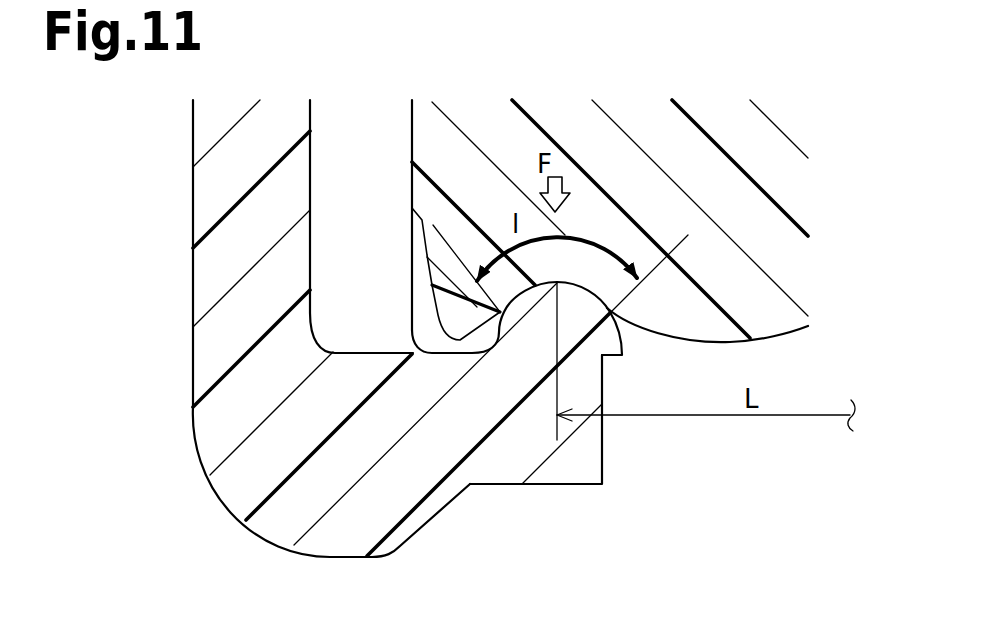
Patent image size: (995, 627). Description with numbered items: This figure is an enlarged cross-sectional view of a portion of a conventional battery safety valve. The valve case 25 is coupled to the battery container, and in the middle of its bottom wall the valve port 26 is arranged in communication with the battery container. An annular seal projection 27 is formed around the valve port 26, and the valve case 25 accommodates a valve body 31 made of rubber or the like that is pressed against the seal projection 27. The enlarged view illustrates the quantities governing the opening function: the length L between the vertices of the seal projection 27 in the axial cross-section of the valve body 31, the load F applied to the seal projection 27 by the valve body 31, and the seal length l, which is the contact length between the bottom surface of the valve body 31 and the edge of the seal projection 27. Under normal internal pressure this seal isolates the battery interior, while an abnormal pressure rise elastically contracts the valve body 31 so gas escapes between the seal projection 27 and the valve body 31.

The valve case 25 is at (202, 275).
The valve port 26 is at (602, 457).
The seal projection 27 is at (585, 320).
The valve body 31 is at (634, 116).